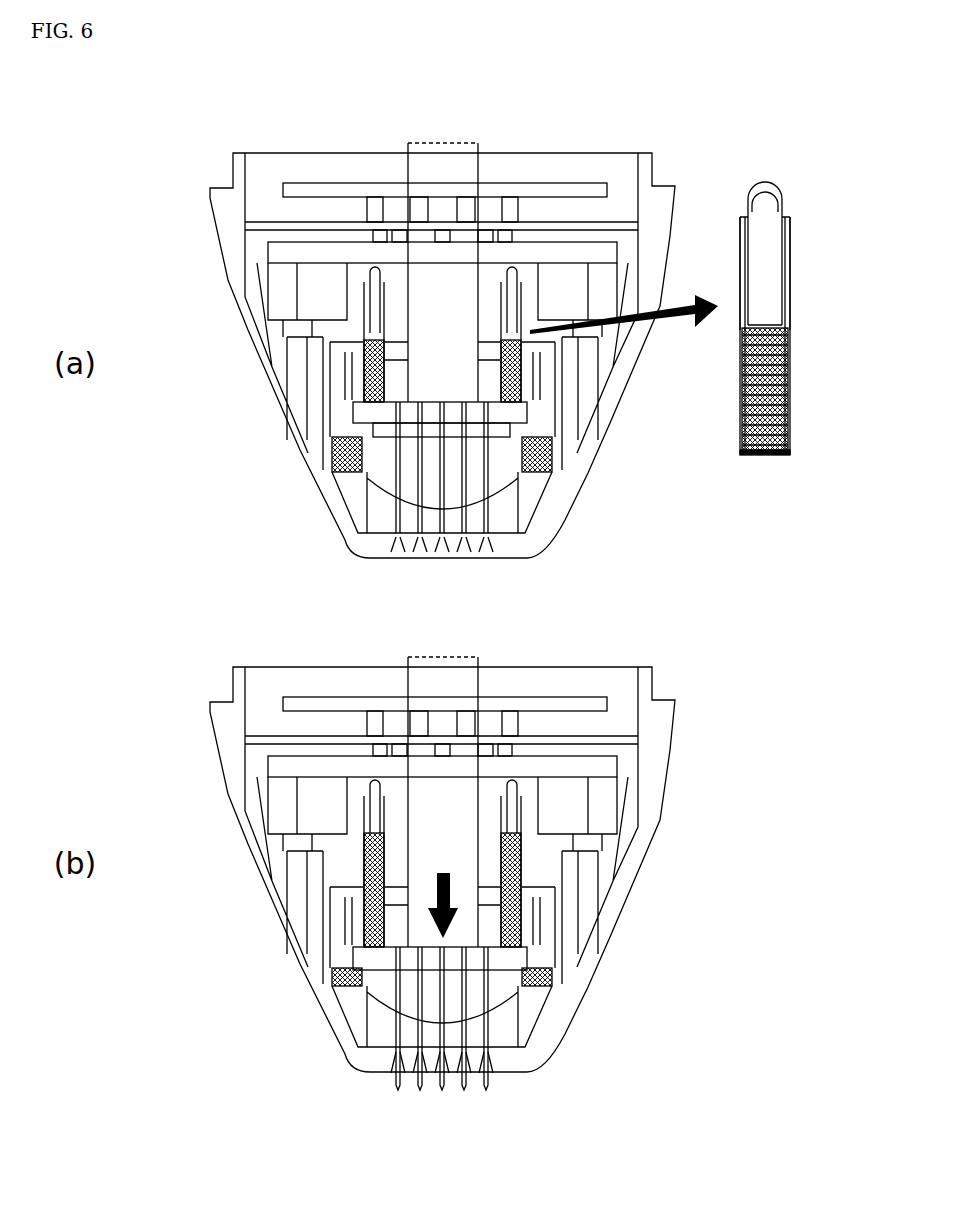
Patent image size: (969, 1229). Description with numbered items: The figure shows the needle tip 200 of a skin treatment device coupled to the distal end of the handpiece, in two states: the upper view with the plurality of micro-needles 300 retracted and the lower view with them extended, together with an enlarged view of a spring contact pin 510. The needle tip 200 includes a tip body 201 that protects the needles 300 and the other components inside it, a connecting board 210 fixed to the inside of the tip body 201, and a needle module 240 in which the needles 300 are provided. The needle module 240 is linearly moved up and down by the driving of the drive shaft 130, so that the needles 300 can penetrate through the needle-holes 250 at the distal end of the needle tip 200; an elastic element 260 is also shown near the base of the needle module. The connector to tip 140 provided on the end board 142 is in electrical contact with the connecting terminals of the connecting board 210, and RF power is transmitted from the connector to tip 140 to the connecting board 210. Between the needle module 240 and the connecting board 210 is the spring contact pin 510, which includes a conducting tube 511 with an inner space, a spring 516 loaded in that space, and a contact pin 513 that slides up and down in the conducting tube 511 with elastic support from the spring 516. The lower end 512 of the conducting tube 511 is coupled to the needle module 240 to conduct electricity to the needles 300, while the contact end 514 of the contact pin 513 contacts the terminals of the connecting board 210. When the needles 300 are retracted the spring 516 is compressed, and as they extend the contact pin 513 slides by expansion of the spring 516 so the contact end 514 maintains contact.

The drive shaft 130 is at (423, 170).
The connector to tip 140 is at (372, 210).
The end board 142 is at (283, 190).
The needle tip 200 is at (604, 440).
The tip body 201 is at (567, 492).
The connecting board 210 is at (275, 252).
The needle module 240 is at (365, 413).
The needle-holes 250 is at (495, 556).
The elastic member 260 is at (335, 453).
The micro-needles 300 is at (368, 516).
The spring contact pin 510 is at (362, 304).
The conducting tube 511 is at (789, 405).
The lower end of the conducting tube 512 is at (783, 452).
The contact pin 513 is at (767, 230).
The contact end of the contact pin 514 is at (772, 184).
The spring 516 is at (789, 358).